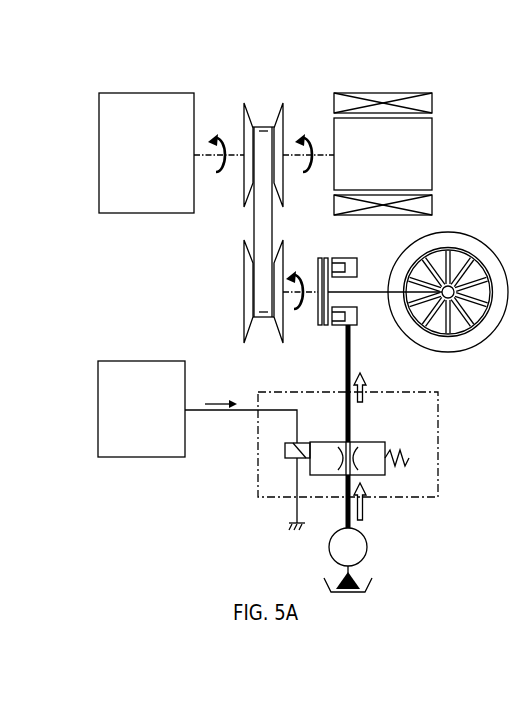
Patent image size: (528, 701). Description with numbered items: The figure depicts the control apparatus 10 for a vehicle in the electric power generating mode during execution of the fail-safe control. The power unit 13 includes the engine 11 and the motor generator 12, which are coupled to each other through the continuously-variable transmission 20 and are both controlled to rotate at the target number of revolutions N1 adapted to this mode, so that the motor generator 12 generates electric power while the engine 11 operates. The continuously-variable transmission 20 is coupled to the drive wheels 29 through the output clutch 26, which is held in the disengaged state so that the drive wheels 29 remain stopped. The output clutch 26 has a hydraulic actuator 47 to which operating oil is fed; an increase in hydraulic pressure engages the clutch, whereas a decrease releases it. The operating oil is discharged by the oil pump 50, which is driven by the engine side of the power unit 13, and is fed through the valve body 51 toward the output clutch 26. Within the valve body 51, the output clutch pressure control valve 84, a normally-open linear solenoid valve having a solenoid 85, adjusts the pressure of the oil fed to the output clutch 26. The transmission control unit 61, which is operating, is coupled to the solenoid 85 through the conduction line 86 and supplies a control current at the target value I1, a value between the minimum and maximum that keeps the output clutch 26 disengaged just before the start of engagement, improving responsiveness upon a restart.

The control apparatus 10 is at (412, 53).
The engine 11 is at (160, 93).
The motor generator 12 is at (434, 135).
The power unit 13 is at (290, 72).
The continuously-variable transmission 20 is at (240, 282).
The output clutch 26 is at (314, 243).
The drive wheels 29 is at (457, 231).
The hydraulic actuator 47 is at (358, 320).
The oil pump 50 is at (330, 549).
The valve body 51 is at (379, 445).
The transmission control unit 61 is at (112, 361).
The output clutch pressure control valve 84 is at (377, 442).
The solenoid 85 is at (293, 459).
The conduction line 86 is at (243, 414).